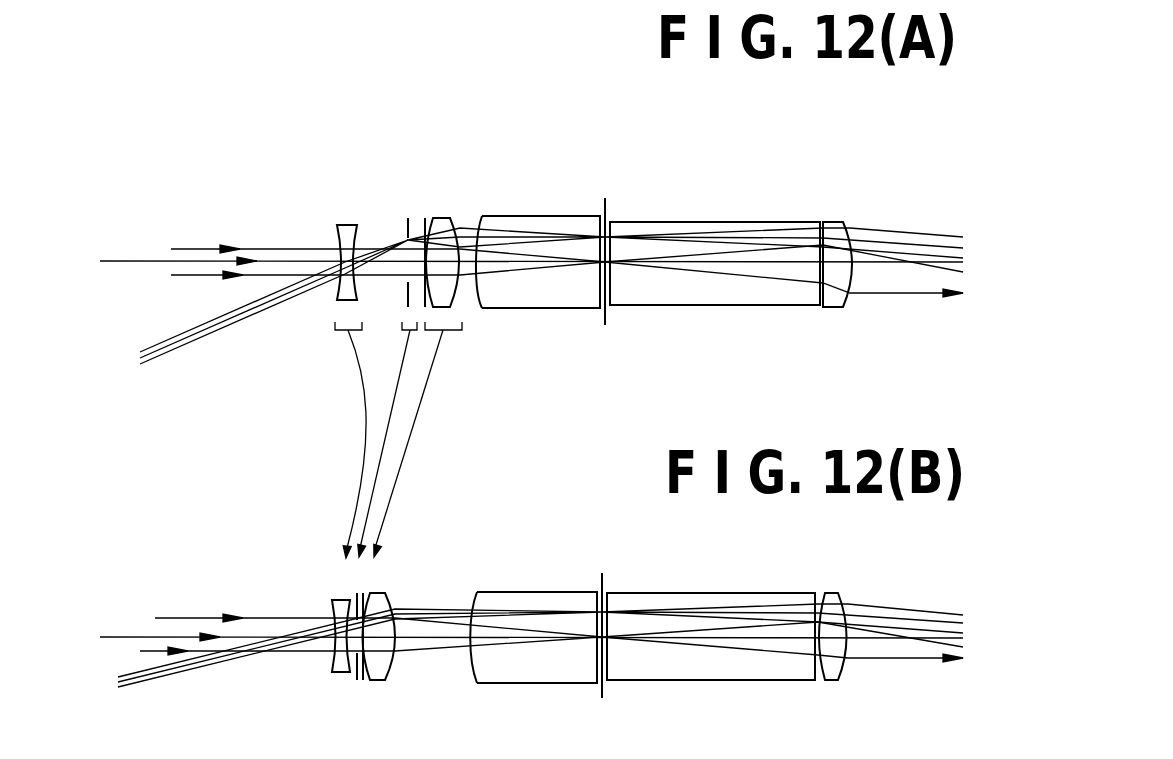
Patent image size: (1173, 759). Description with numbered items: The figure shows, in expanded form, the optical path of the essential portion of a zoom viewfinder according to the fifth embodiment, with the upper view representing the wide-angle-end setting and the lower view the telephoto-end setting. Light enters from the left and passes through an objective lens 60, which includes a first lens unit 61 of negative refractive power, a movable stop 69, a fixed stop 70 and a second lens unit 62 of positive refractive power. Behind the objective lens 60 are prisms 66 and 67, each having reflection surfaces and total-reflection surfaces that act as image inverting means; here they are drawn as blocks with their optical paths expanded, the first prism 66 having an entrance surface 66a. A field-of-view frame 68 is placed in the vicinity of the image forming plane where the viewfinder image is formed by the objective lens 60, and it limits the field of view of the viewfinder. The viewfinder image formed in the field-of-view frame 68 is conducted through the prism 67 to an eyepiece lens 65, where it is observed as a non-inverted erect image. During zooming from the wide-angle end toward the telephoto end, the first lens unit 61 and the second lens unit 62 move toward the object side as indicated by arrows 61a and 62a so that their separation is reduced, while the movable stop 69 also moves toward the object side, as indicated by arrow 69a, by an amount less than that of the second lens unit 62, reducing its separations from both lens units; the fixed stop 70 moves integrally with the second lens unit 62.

In FIG. 12A, the objective lens 60 is at (445, 122).
In FIG. 12A, the first lens unit 61 is at (348, 222).
In FIG. 12B, the first lens unit 61 is at (341, 636).
In FIG. 12A, the movable stop 69 is at (406, 235).
In FIG. 12A, the fixed stop 70 is at (425, 232).
In FIG. 12A, the second lens unit 62 is at (443, 218).
In FIG. 12B, the second lens unit 62 is at (379, 636).
In FIG. 12A, the concave entrance surface of glass block 66a is at (481, 222).
In FIG. 12B, the concave entrance surface of glass block 66a is at (473, 637).
In FIG. 12A, the prism 66 is at (560, 215).
In FIG. 12B, the prism 66 is at (533, 637).
In FIG. 12A, the prism 67 is at (700, 220).
In FIG. 12B, the prism 67 is at (711, 636).
In FIG. 12A, the eyepiece lens 65 is at (840, 220).
In FIG. 12B, the eyepiece lens 65 is at (833, 636).
In FIG. 12A, the field-of-view frame 68 is at (605, 313).
In FIG. 12A, the arrow 61a is at (360, 388).
In FIG. 12A, the arrow 62a is at (418, 413).
In FIG. 12A, the arrow 69a is at (381, 462).